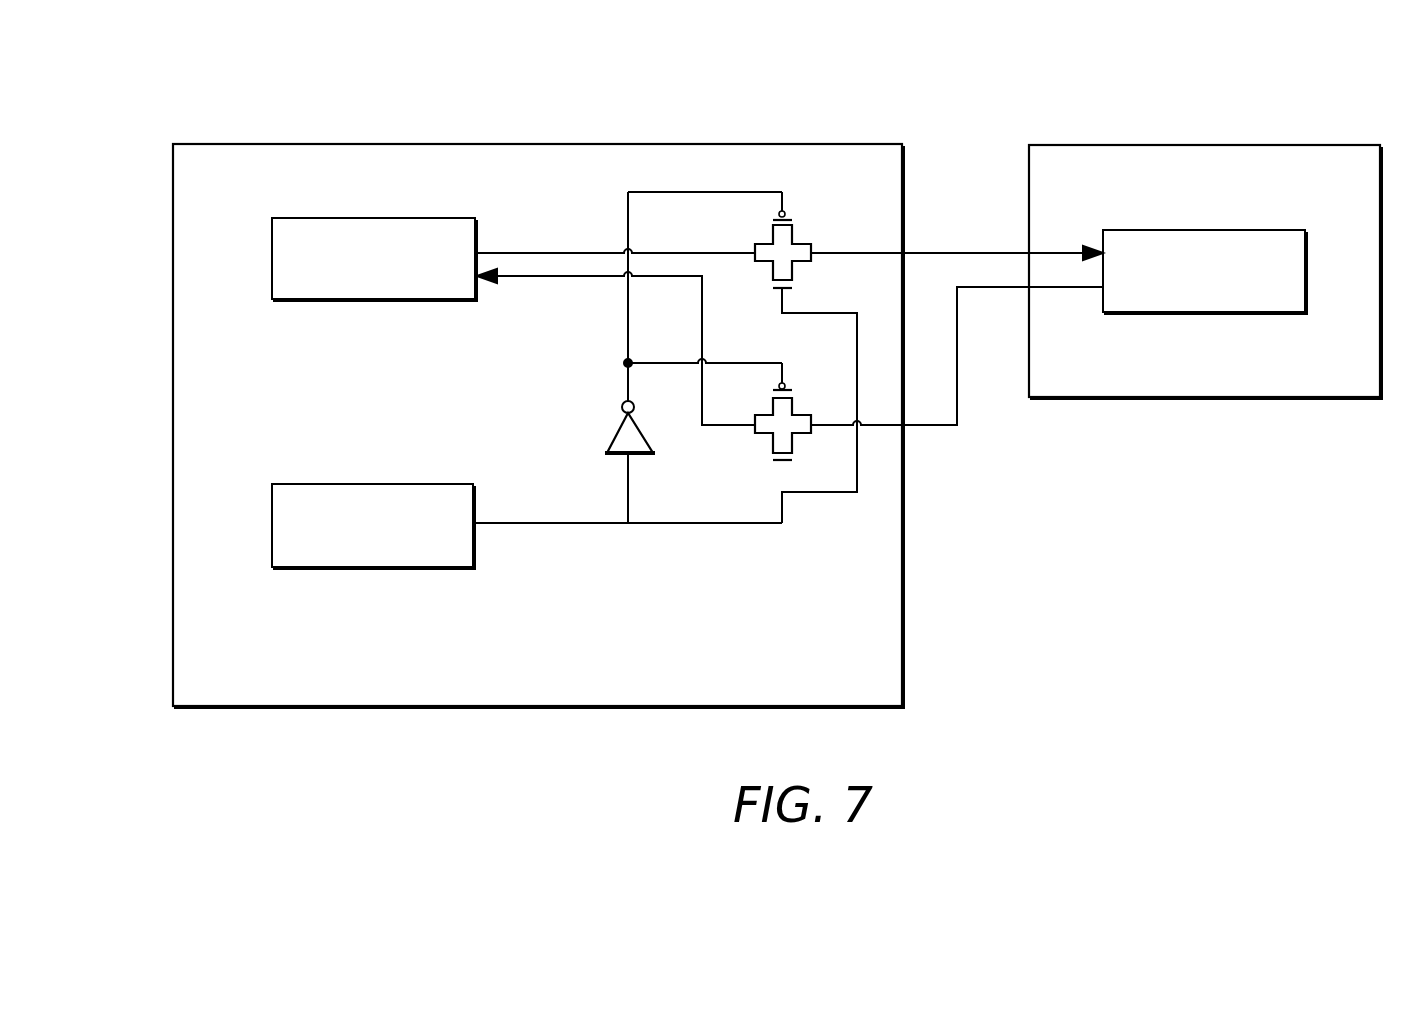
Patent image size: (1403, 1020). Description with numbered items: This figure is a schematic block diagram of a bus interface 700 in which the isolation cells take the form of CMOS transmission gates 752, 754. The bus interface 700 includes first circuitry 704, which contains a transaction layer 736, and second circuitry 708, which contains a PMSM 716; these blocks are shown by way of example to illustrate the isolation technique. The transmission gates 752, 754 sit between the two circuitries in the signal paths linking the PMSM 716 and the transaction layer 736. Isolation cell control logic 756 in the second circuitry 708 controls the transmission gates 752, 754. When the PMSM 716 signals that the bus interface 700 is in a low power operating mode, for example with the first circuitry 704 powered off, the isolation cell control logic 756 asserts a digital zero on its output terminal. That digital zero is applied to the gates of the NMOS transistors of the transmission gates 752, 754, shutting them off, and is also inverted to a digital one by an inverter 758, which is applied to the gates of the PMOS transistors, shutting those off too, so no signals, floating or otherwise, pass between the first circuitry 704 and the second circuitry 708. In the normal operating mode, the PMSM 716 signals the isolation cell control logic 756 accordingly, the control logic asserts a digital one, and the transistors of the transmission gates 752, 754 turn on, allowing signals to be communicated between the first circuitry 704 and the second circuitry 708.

The bus interface 700 is at (205, 64).
The first circuitry 704 is at (1090, 180).
The second circuitry 708 is at (246, 183).
The PMSM 716 is at (458, 218).
The transaction layer 736 is at (1288, 230).
The CMOS transmission gate 752 is at (806, 245).
The CMOS transmission gate 754 is at (764, 438).
The isolation cell control logic 756 is at (458, 484).
The inverter 758 is at (617, 428).